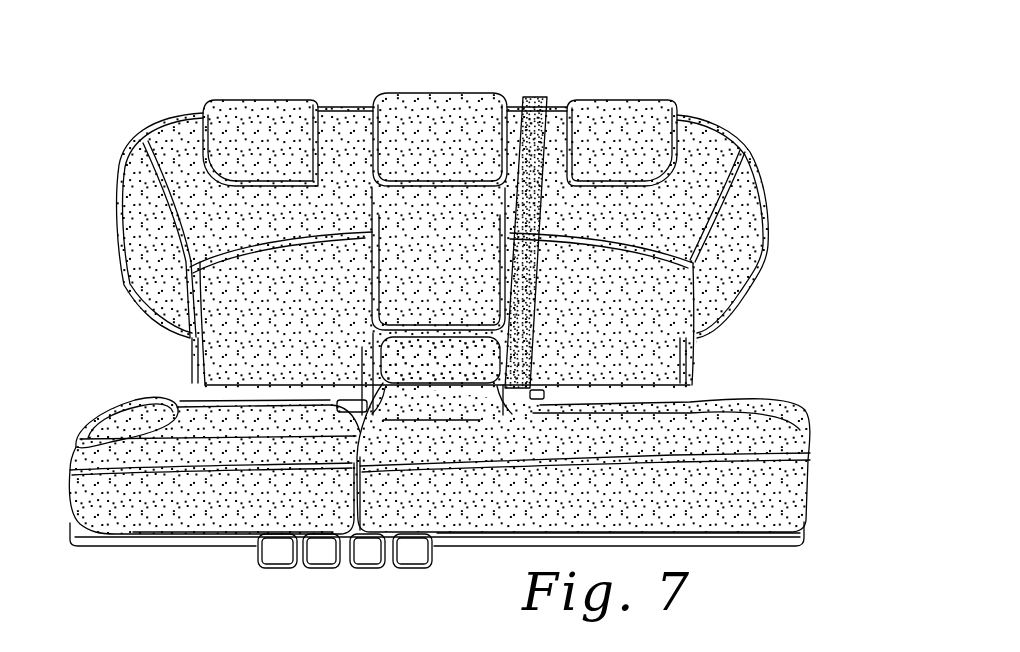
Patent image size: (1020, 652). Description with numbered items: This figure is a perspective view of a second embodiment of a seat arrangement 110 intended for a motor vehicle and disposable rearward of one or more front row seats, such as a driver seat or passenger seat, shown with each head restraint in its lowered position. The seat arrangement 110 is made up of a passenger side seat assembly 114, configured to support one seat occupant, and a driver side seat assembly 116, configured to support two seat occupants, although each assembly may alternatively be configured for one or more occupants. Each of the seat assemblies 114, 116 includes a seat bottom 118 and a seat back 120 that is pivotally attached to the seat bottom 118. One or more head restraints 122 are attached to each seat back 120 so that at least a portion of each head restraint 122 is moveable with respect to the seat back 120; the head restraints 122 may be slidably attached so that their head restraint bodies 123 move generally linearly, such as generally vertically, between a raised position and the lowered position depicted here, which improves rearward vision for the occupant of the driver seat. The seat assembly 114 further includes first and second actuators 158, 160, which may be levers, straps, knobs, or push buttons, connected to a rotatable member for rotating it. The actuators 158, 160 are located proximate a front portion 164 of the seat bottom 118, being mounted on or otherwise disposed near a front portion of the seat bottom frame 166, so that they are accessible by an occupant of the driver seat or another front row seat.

The seat arrangement 110 is at (100, 124).
The passenger side seat assembly 114 is at (100, 204).
The driver side seat assembly 116 is at (776, 130).
The seat bottom 118 is at (70, 456).
The seat back 120 is at (138, 289).
The head restraint 122 is at (259, 99).
The head restraint body 123 is at (295, 100).
The first actuator 158 is at (277, 569).
The second actuator 160 is at (324, 572).
The front portion of the seat bottom 164 is at (207, 541).
The seat bottom frame 166 is at (128, 545).